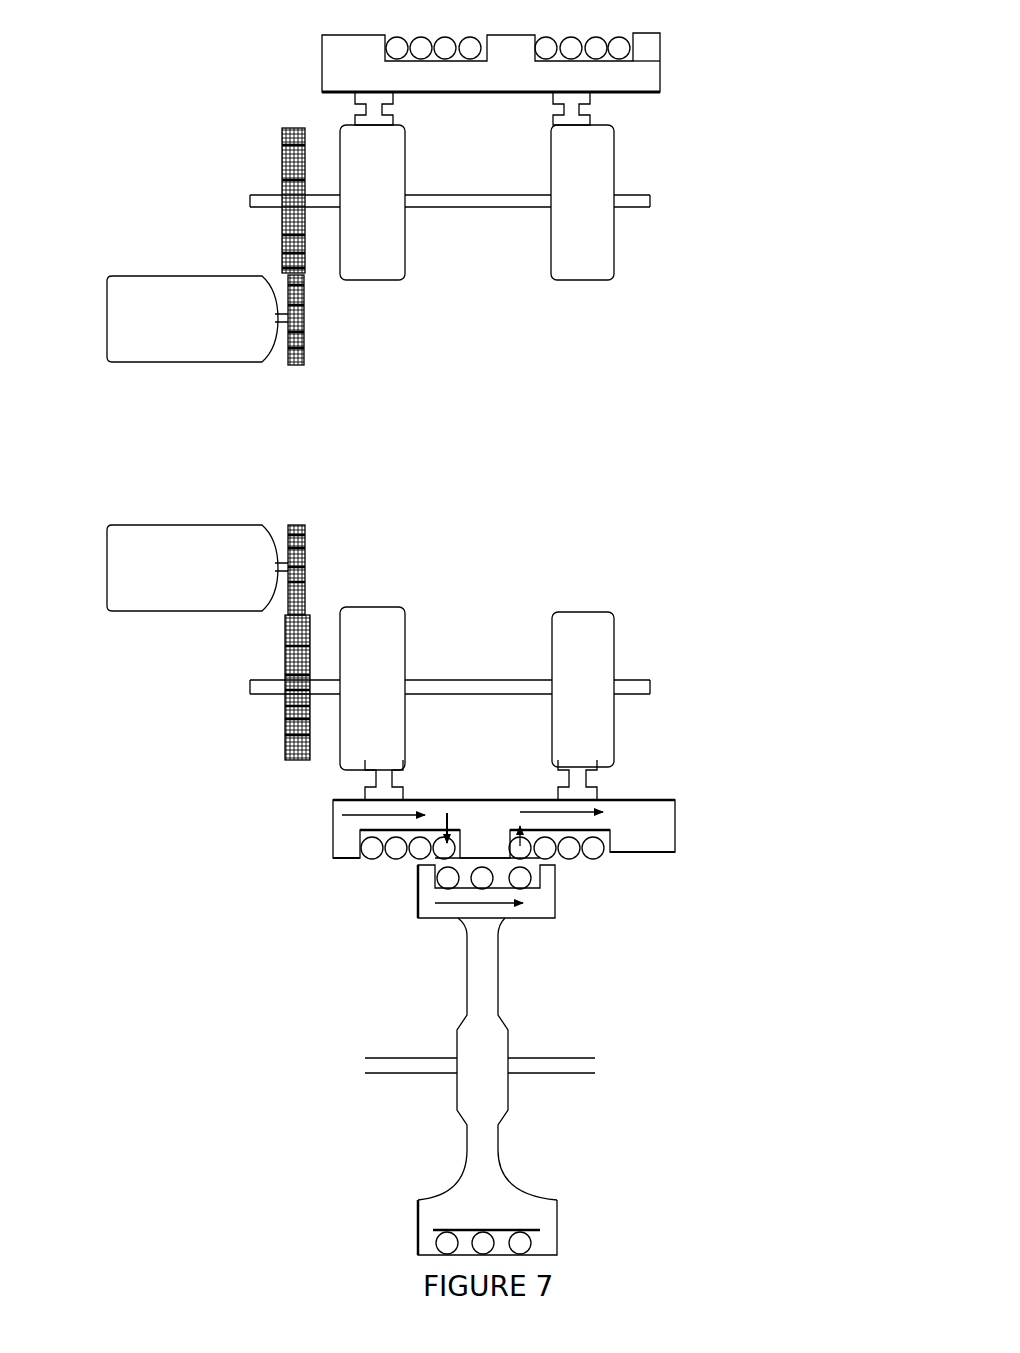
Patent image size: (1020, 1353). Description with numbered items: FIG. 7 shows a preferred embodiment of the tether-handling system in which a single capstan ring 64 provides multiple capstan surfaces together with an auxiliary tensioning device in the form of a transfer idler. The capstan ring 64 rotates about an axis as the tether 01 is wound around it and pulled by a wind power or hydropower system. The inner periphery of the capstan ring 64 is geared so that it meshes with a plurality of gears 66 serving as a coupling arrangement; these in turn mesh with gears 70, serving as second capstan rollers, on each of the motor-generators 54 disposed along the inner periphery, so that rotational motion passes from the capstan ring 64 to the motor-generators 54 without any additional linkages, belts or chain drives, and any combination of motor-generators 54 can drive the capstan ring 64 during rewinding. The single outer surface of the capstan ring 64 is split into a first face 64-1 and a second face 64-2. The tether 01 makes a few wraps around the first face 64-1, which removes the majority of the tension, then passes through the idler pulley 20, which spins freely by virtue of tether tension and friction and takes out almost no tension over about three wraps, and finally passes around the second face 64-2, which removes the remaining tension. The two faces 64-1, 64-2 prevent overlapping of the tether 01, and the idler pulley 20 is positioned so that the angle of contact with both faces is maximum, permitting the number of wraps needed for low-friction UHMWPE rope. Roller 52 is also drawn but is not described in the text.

The capstan ring 64 is at (662, 43).
The first face 64-1 is at (423, 80).
The second face 64-2 is at (541, 78).
The tether 01 is at (626, 64).
The gears 66 is at (402, 248).
The gears 70 is at (308, 352).
The motor-generators 54 is at (169, 322).
The roller 52 is at (616, 620).
The idler pulley 20 is at (530, 1206).